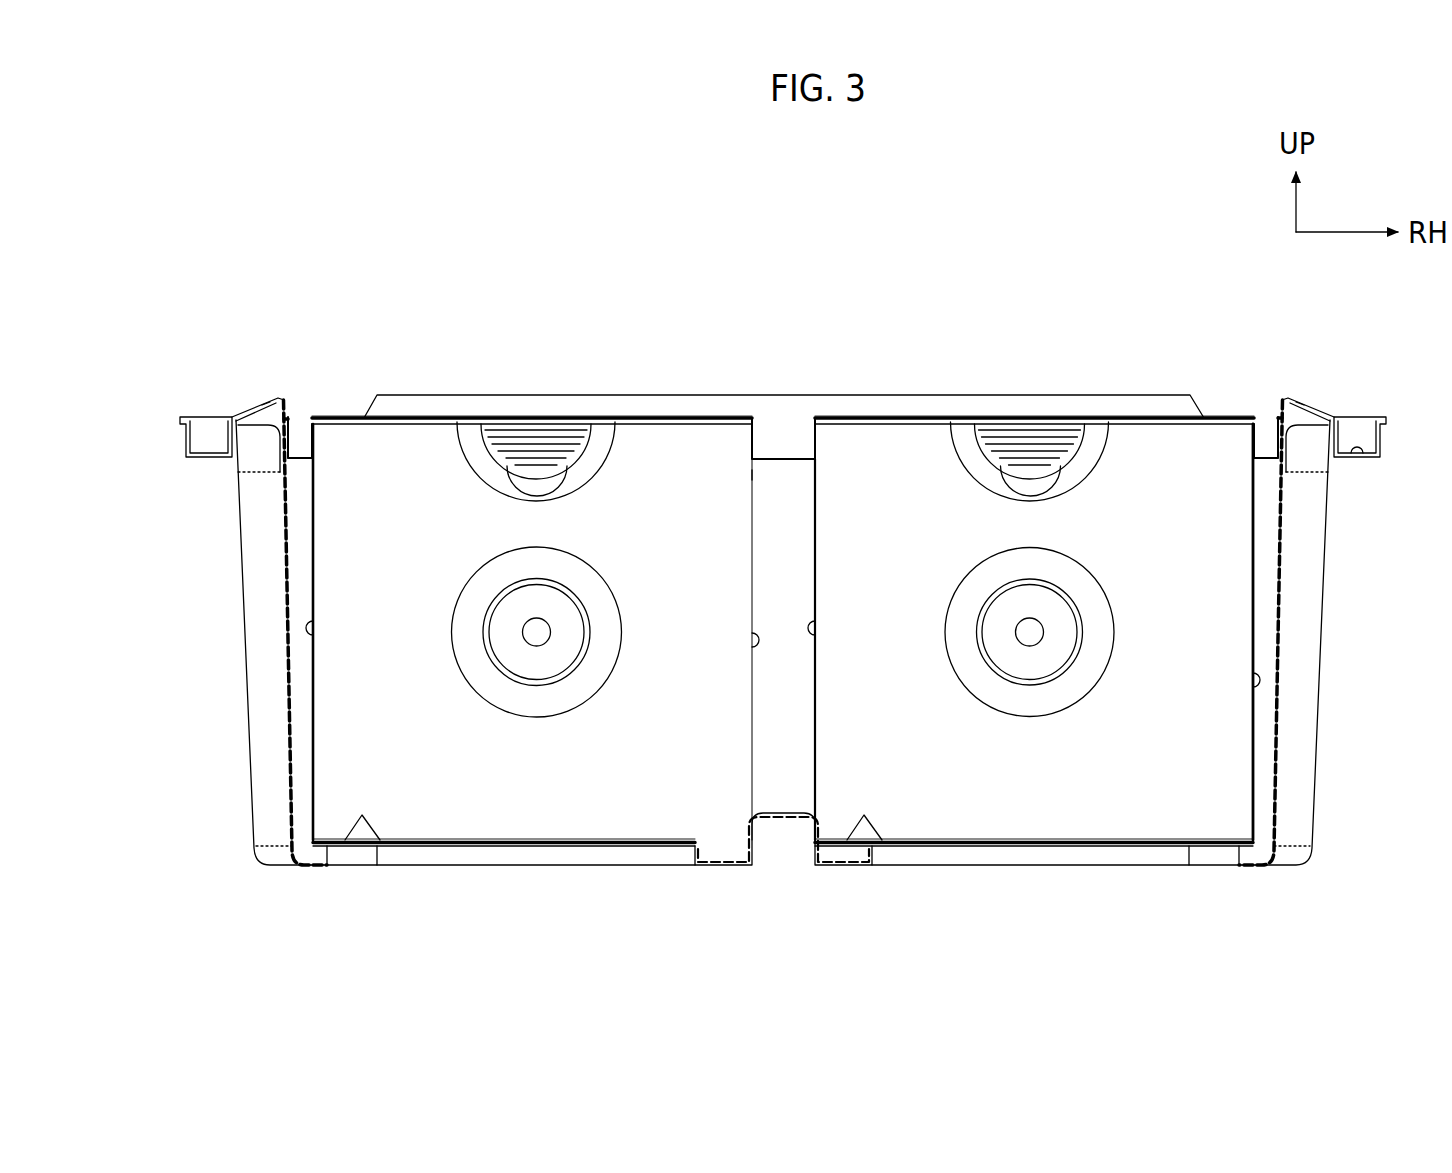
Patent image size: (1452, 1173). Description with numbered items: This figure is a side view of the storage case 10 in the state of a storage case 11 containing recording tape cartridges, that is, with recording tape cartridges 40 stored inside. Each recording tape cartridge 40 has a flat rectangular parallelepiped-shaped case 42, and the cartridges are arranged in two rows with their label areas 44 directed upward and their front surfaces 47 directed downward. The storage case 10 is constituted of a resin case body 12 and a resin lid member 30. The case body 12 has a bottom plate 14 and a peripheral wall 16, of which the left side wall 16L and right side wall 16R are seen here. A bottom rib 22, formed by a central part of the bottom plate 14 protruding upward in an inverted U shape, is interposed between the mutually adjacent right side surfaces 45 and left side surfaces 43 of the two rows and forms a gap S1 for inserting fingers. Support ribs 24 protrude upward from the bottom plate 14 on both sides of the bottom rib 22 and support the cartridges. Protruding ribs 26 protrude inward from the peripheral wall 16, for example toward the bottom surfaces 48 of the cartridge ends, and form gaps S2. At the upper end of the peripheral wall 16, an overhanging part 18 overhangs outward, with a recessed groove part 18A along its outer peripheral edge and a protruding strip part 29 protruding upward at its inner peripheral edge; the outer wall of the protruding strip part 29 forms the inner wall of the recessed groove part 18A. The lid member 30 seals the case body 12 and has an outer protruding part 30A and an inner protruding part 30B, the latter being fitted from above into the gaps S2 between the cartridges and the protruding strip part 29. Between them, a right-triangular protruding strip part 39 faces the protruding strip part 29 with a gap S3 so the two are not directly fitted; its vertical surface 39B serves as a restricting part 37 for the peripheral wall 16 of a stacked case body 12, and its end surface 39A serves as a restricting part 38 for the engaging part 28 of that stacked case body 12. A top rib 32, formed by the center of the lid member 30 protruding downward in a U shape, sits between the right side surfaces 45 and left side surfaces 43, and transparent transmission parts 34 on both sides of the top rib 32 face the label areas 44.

The storage case 10 is at (782, 592).
The storage case containing recording tape cartridges 11 is at (782, 592).
The case body 12 is at (264, 868).
The bottom plate 14 is at (1210, 868).
The peripheral wall 16 is at (1285, 629).
The left side wall 16L is at (286, 688).
The right side wall 16R is at (1284, 694).
The overhanging part 18 is at (1386, 437).
The recessed groove part 18A is at (1357, 458).
The bottom rib 22 is at (792, 812).
The support rib 24 is at (572, 838).
The protruding rib 26 is at (318, 570).
The engaging part 28 is at (234, 512).
The protruding strip part 29 is at (275, 398).
The lid member 30 is at (510, 410).
The protruding part 30A is at (180, 414).
The protruding part 30B is at (316, 414).
The top rib 32 is at (760, 463).
The transmission part 34 is at (566, 416).
The restricting part 37 is at (768, 327).
The restricting part 38 is at (783, 341).
The protruding strip part 39 is at (286, 407).
The end surface 39A is at (364, 415).
The vertical surface 39B is at (293, 413).
The recording tape cartridge 40 is at (733, 866).
The case 42 is at (311, 749).
The left side surface 43 is at (318, 629).
The label area 44 is at (682, 415).
The right side surface 45 is at (750, 640).
The front surface 47 is at (328, 864).
The bottom surface 48 is at (476, 796).
The gap S1 is at (778, 492).
The gap S2 is at (297, 652).
The gap S3 is at (270, 400).